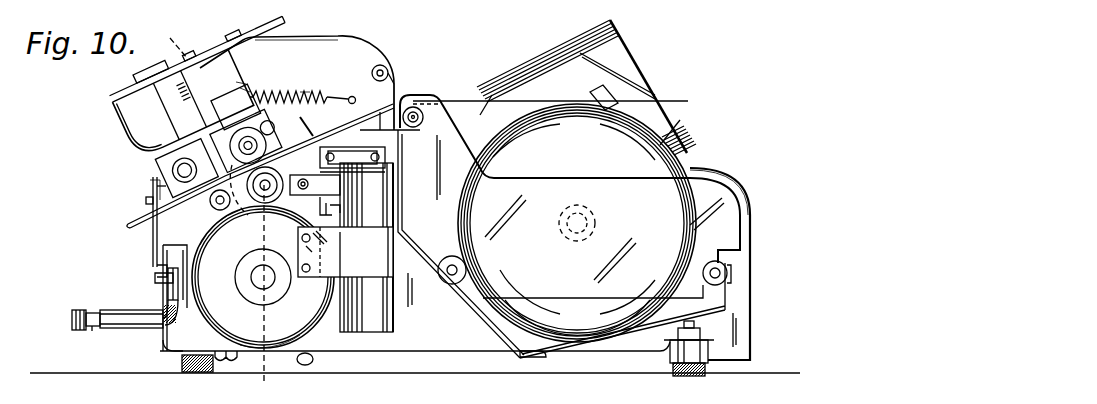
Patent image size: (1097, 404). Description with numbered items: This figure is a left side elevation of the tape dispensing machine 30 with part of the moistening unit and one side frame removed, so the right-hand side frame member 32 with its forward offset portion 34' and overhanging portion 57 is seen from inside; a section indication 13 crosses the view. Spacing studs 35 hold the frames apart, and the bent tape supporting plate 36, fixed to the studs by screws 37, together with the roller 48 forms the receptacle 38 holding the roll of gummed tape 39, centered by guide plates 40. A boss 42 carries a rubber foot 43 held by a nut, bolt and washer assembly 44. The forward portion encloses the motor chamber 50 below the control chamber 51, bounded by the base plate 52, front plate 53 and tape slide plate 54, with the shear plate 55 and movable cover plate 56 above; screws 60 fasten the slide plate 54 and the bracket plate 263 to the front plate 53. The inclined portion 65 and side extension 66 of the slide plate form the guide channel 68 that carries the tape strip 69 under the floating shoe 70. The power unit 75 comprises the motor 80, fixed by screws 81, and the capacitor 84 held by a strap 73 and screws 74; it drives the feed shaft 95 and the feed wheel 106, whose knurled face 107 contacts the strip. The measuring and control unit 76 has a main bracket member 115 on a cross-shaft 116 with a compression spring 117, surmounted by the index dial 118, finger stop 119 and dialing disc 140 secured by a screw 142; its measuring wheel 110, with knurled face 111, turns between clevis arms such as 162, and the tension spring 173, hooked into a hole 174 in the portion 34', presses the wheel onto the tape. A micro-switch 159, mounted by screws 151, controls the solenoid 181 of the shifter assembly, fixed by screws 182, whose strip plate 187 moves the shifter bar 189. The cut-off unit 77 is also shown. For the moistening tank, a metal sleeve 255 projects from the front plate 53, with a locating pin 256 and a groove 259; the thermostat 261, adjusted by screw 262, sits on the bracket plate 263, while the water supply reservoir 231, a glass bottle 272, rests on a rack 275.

The section line 13- 13 is at (147, 33).
The tape dispensing machine 30 is at (447, 68).
The right-hand side frame member 32 is at (360, 55).
The forward outwardly offset portion 34' is at (416, 90).
The spacing studs 35 is at (722, 283).
The tape supporting plate 36 is at (546, 355).
The screws 37 is at (731, 270).
The receptacle 38 is at (487, 133).
The roll of gummed tape 39 is at (670, 143).
The guide plates 40 is at (713, 195).
The boss 42 is at (668, 357).
The foot 43 is at (707, 370).
The nut, bolt, and washer assembly 44 is at (700, 333).
The roller 48 is at (452, 285).
The motor chamber 50 is at (336, 358).
The control chamber 51 is at (292, 62).
The base plate 52 is at (228, 364).
The front plate 53 is at (162, 341).
The tape slide plate 54 is at (417, 108).
The shear plate 55 is at (157, 189).
The movable cover plate 56 is at (288, 31).
The overhanging outwardly extending portion 57 is at (398, 66).
The screws 60 is at (170, 248).
The inclined portion 65 is at (153, 232).
The side extension 66 is at (322, 128).
The guide channel 68 is at (238, 212).
The strip of tape 69 is at (128, 229).
The floating shoe 70 is at (312, 122).
The strap 73 is at (380, 237).
The screws 74 is at (325, 244).
The power unit 75 is at (200, 323).
The measuring and control unit 76 is at (236, 82).
The cut-off unit 77 is at (150, 208).
The motor 80 is at (280, 335).
The screws 81 is at (212, 368).
The starting and running capacitor 84 is at (370, 319).
The feed shaft 95 is at (260, 208).
The feed wheel 106 is at (278, 176).
The knurled peripheral face 107 is at (258, 215).
The measuring wheel 110 is at (240, 140).
The knurled face 111 is at (232, 103).
The main bracket member 115 is at (128, 126).
The cross-shaft 116 is at (172, 164).
The compression spring 117 is at (176, 170).
The circular numbered index dial 118 is at (128, 96).
The finger stop 119 is at (150, 66).
The dialing disc 140 is at (224, 42).
The screw 142 is at (191, 54).
The screws 151 is at (258, 95).
The micro-switch 159 is at (240, 88).
The clevis arm 162 is at (146, 200).
The tension spring 173 is at (306, 92).
The hole 174 is at (352, 96).
The solenoid 181 is at (352, 174).
The screws 182 is at (355, 149).
The strip plate 187 is at (341, 210).
The shifter bar 189 is at (320, 208).
The water supply reservoir 231 is at (658, 93).
The metal sleeve 255 is at (72, 319).
The locating pin 256 is at (158, 268).
The groove 259 is at (92, 330).
The thermostat 261 is at (170, 288).
The screw 262 is at (156, 278).
The bracket plate 263 is at (198, 248).
The glass bottle 272 is at (630, 43).
The rack 275 is at (651, 82).